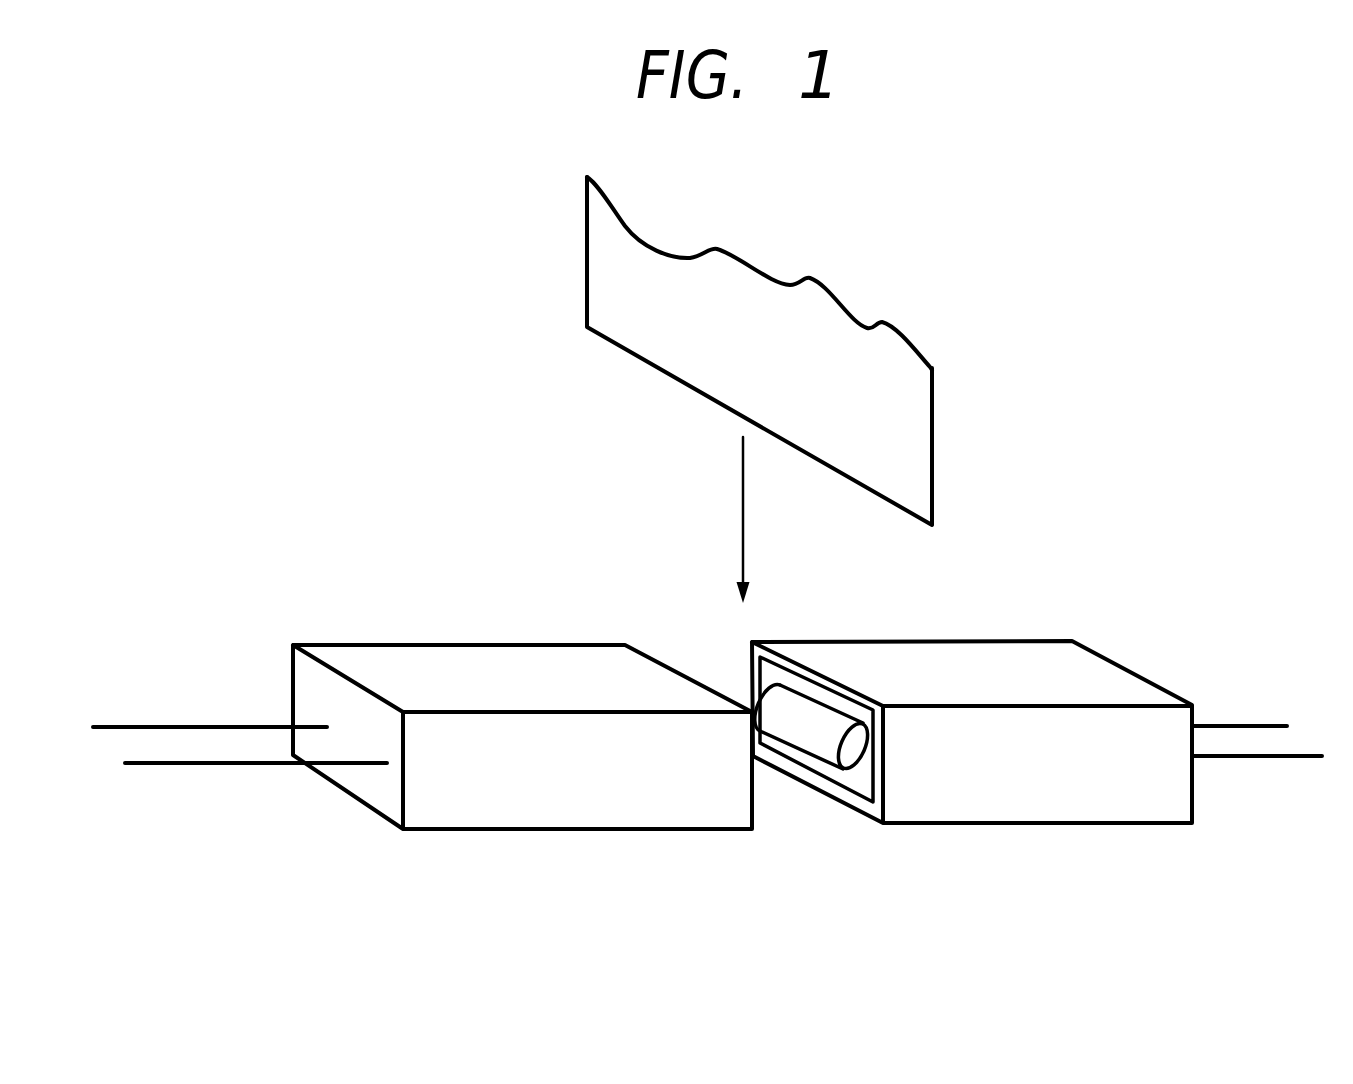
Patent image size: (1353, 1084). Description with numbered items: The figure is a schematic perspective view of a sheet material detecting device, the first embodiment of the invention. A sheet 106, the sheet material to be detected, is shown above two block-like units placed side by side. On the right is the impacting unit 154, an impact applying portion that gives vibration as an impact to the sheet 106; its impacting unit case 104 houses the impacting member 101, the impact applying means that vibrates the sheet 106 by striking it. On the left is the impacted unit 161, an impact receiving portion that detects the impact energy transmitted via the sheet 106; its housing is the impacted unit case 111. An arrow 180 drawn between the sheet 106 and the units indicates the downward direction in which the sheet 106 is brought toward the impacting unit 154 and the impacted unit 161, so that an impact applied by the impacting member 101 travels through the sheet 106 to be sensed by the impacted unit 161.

The impacting member 101 is at (815, 742).
The impacting unit case 104 is at (1105, 807).
The sheet 106 is at (610, 275).
The impacted unit case 111 is at (578, 810).
The impacting unit 154 is at (985, 582).
The impacted unit 161 is at (502, 563).
The direction of movement of sheet 180 is at (743, 537).